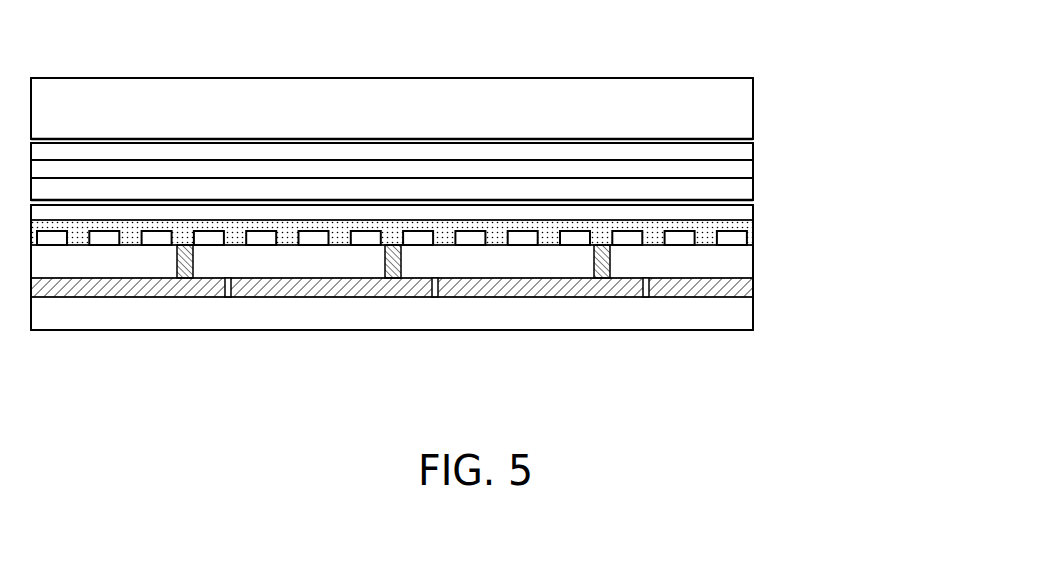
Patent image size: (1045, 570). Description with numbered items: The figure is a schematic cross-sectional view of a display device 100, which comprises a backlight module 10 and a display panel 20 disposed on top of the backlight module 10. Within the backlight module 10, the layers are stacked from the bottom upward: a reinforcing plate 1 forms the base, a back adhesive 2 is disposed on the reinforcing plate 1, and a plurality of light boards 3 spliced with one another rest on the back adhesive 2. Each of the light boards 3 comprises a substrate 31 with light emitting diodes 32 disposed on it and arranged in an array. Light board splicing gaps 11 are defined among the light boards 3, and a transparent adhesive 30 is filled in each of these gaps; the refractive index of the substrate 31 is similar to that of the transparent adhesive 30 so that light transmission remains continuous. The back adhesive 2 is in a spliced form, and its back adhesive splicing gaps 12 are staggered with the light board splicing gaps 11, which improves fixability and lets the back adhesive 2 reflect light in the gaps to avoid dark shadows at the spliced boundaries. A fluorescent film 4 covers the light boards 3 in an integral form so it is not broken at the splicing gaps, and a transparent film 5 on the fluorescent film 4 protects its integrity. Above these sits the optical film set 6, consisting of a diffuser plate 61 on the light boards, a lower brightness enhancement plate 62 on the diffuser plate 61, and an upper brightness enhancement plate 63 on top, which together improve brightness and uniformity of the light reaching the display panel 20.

The display device 100 is at (104, 59).
The display panel 20 is at (717, 110).
The backlight module 10 is at (492, 253).
The optical film set 6 is at (462, 164).
The upper brightness enhancement plate 63 is at (732, 148).
The lower brightness enhancement plate 62 is at (732, 168).
The diffuser plate 61 is at (733, 192).
The transparent film 5 is at (727, 213).
The fluorescent film 4 is at (727, 223).
The light boards 3 is at (463, 265).
The light emitting diodes 32 is at (727, 238).
The substrate 31 is at (702, 257).
The transparent adhesive 30 is at (393, 265).
The light board splicing gaps 11 is at (178, 275).
The back adhesive splicing gaps 12 is at (231, 307).
The back adhesive 2 is at (702, 287).
The reinforcing plate 1 is at (447, 329).